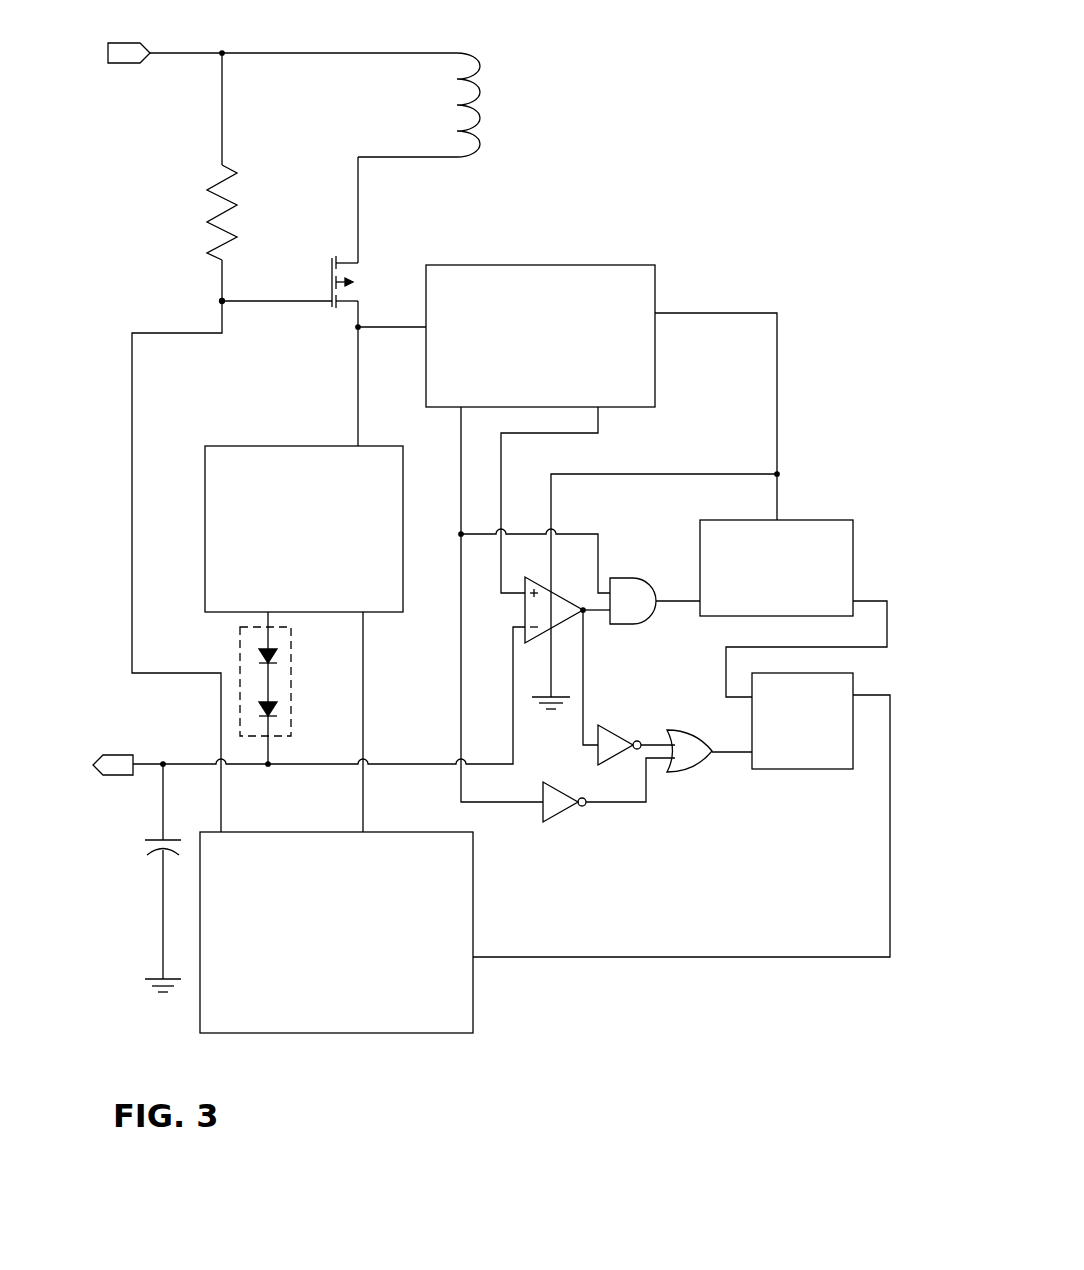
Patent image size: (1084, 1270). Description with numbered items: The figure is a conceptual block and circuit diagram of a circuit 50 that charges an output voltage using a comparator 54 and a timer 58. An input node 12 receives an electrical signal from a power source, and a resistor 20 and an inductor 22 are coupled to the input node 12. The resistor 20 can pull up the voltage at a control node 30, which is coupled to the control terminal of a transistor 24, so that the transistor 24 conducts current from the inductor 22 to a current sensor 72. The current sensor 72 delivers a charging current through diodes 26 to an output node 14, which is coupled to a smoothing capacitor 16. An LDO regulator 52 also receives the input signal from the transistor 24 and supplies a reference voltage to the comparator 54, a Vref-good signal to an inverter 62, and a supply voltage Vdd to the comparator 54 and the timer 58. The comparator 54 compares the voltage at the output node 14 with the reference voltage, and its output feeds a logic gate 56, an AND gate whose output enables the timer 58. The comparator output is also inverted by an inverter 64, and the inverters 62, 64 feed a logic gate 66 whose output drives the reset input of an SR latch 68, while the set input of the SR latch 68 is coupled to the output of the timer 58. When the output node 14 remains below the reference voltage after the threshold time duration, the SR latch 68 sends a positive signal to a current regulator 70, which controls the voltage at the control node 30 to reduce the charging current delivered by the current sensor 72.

The input node 12 is at (128, 43).
The output node 14 is at (117, 755).
The capacitor 16 is at (160, 852).
The resistor 20 is at (214, 185).
The inductor 22 is at (457, 53).
The transistor 24 is at (348, 262).
The diodes 26 is at (291, 668).
The control node 30 is at (222, 300).
The circuit 50 is at (742, 64).
The LDO regulator 52 is at (605, 265).
The comparator 54 is at (560, 625).
The logic gate 56 is at (620, 578).
The timer 58 is at (815, 520).
The inverter 62 is at (555, 822).
The inverter 64 is at (608, 728).
The logic gate 66 is at (678, 773).
The SR latch 68 is at (800, 770).
The current regulator 70 is at (475, 890).
The current sensor 72 is at (290, 446).